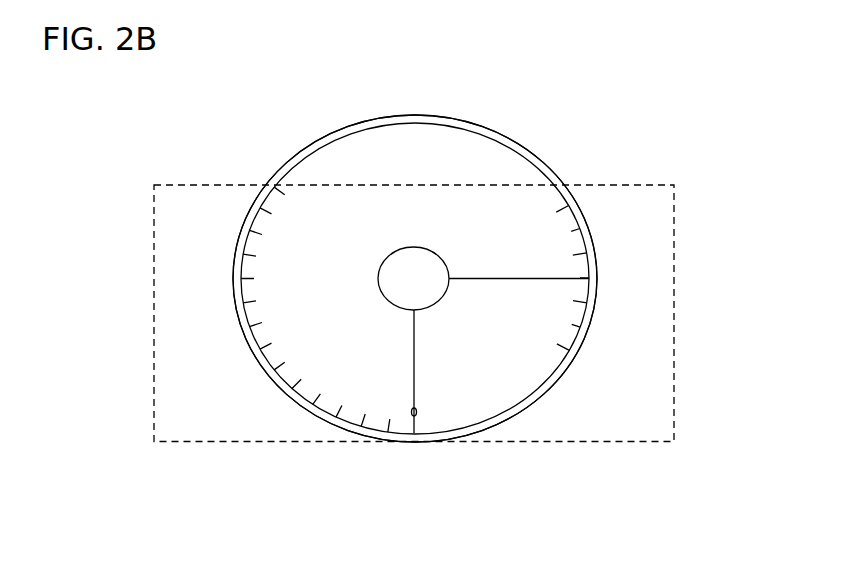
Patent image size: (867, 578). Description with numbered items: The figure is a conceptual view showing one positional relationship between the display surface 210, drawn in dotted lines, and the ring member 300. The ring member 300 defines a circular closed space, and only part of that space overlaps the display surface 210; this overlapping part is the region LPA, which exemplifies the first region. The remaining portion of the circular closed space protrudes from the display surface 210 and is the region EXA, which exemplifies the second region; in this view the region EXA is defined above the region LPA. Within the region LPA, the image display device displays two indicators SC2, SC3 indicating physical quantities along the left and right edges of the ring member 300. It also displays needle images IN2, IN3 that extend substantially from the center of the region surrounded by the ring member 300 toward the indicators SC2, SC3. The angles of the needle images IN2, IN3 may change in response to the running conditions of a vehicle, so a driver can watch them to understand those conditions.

The display surface 210 is at (643, 230).
The ring member 300 is at (517, 143).
The region protruding from the display surface EXA is at (423, 139).
The needle image IN3 is at (502, 278).
The needle image IN2 is at (417, 382).
The region in which the display surface overlaps the circular closed space LPA is at (470, 362).
The indicator SC2 is at (301, 337).
The indicator SC3 is at (551, 316).